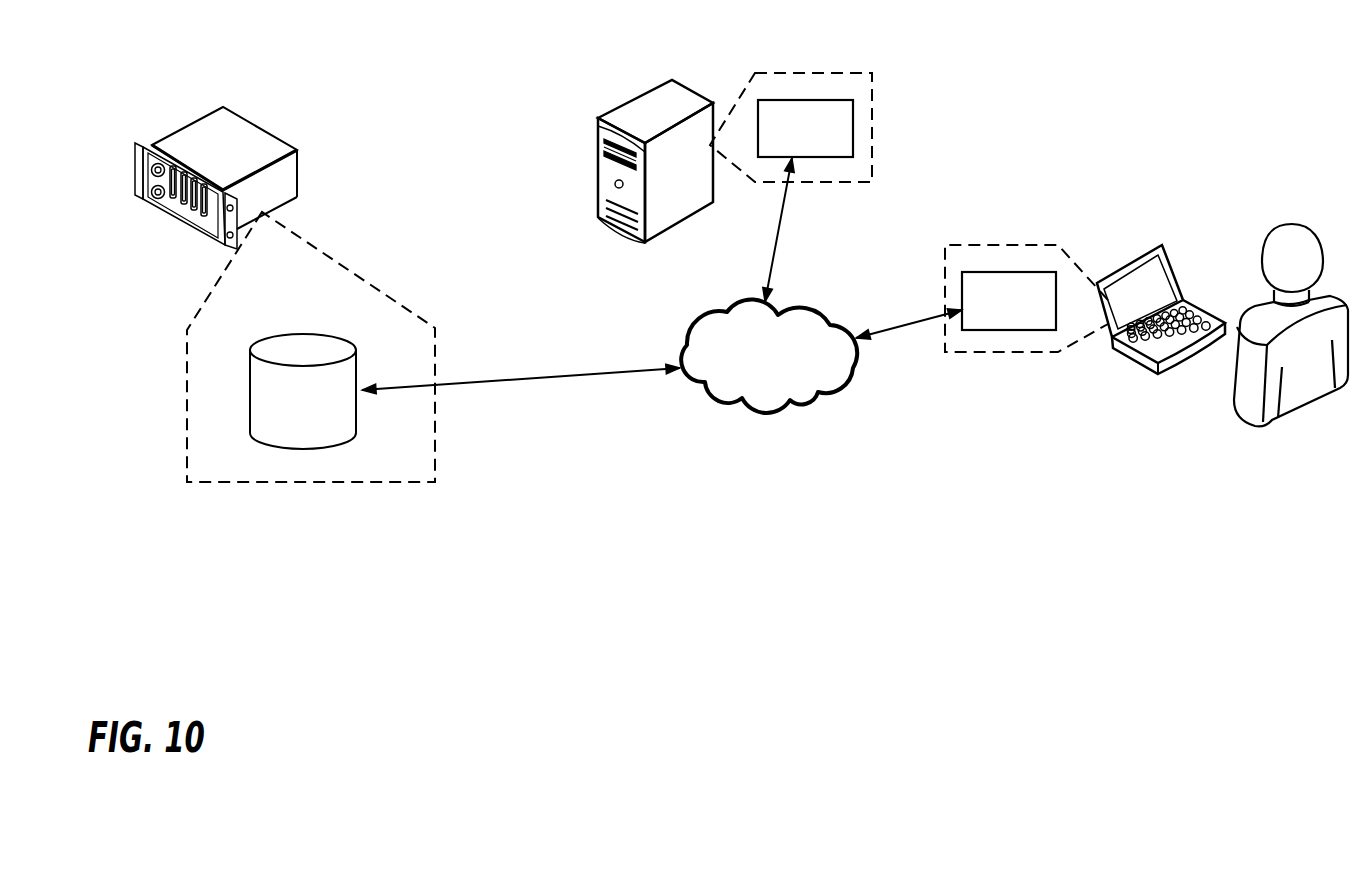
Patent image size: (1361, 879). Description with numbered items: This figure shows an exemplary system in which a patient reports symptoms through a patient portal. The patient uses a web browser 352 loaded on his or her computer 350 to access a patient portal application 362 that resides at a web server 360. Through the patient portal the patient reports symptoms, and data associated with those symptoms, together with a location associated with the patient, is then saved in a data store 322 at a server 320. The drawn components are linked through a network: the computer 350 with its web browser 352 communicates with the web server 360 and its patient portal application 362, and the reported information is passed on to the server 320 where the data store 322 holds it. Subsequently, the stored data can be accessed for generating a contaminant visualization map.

The server 320 is at (260, 152).
The data store 322 is at (310, 350).
The web server 360 is at (648, 117).
The patient portal application 362 is at (827, 112).
The web browser 352 is at (1008, 280).
The computer 350 is at (1170, 250).